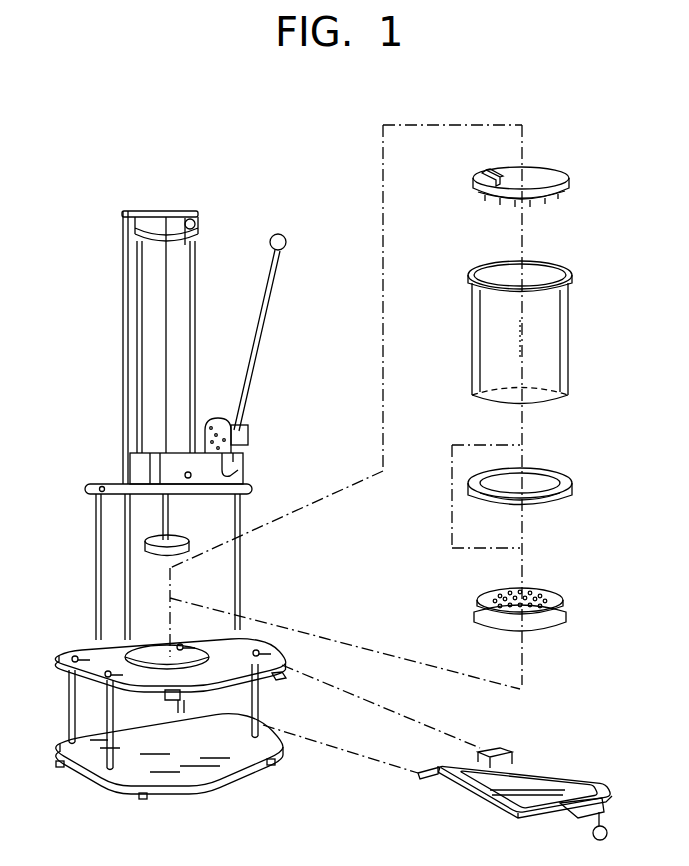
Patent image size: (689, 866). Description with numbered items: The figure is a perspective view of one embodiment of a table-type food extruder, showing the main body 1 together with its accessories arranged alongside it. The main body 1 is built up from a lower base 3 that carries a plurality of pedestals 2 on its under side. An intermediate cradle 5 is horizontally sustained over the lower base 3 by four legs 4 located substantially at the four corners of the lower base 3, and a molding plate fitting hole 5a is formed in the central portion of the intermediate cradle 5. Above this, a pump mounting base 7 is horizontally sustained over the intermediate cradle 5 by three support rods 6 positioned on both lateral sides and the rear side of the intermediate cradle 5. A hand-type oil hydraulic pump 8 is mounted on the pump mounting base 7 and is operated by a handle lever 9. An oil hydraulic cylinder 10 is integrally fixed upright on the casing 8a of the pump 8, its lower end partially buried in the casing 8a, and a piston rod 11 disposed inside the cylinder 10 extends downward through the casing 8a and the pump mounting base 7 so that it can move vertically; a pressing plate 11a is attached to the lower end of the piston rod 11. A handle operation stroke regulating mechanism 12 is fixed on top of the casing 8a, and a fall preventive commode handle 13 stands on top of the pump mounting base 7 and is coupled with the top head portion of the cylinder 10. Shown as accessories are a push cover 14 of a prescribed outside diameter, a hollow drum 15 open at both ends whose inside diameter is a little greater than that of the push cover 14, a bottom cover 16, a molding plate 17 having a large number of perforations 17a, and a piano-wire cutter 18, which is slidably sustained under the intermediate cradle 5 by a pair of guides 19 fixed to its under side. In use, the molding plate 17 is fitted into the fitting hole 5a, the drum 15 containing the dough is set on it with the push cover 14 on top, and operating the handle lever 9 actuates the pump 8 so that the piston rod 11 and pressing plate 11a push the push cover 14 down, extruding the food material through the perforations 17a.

The main body 1 is at (94, 514).
The pedestals 2 is at (60, 764).
The lower base 3 is at (202, 770).
The legs 4 is at (68, 704).
The intermediate cradle 5 is at (222, 670).
The molding plate fitting hole 5a is at (147, 654).
The support rods 6 is at (124, 584).
The pump mounting base 7 is at (120, 486).
The hand-type oil hydraulic pump 8 is at (256, 458).
The casing 8a is at (186, 462).
The handle lever 9 is at (256, 355).
The oil hydraulic cylinder 10 is at (236, 313).
The piston rod 11 is at (164, 516).
The pressing plate 11a is at (184, 542).
The handle operation stroke regulating mechanism 12 is at (240, 430).
The fall preventive commode handle 13 is at (122, 305).
The push cover 14 is at (556, 170).
The hollow drum 15 is at (572, 312).
The bottom cover 16 is at (572, 482).
The molding plate 17 is at (566, 598).
The perforations 17a is at (540, 592).
The cutter 18 is at (580, 774).
The guides 19 is at (165, 697).